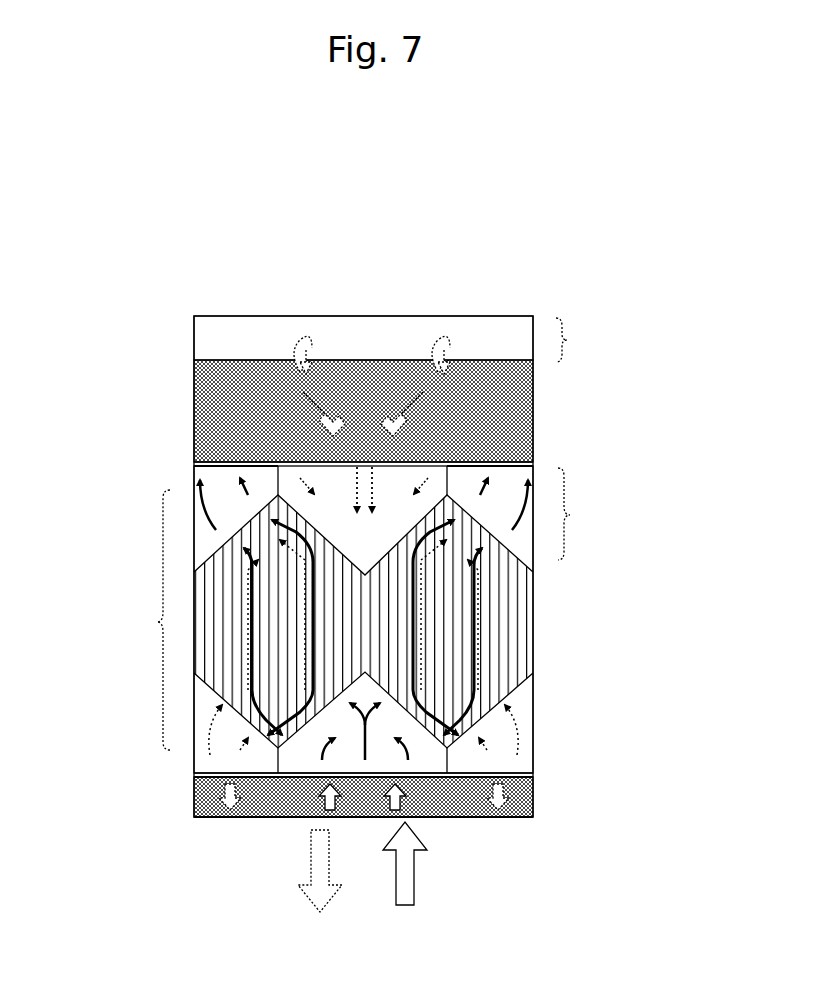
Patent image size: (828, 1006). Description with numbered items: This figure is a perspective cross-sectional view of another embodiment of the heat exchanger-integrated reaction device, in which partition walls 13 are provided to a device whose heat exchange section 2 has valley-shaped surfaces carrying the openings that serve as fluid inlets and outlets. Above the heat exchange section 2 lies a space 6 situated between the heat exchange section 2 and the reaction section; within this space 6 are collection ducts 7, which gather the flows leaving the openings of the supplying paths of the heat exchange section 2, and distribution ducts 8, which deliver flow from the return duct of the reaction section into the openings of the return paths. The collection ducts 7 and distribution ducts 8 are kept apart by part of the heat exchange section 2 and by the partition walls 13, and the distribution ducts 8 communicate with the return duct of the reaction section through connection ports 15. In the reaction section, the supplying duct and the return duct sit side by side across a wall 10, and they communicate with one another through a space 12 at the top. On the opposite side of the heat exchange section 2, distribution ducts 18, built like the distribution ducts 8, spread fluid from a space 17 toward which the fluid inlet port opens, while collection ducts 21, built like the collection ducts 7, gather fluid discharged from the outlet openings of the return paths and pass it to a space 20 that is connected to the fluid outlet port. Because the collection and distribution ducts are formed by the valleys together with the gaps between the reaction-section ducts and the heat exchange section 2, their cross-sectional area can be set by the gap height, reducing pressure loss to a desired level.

The heat exchange section 2 is at (323, 619).
The space 6 is at (405, 614).
The collection duct 7 is at (258, 487).
The distribution duct 8 is at (277, 463).
The wall 10 is at (362, 462).
The space 12 is at (405, 339).
The partition wall 13 is at (285, 478).
The connection port 15 is at (388, 462).
The space 17 is at (225, 795).
The distribution duct 18 is at (213, 818).
The space 20 is at (363, 775).
The collection duct 21 is at (440, 815).